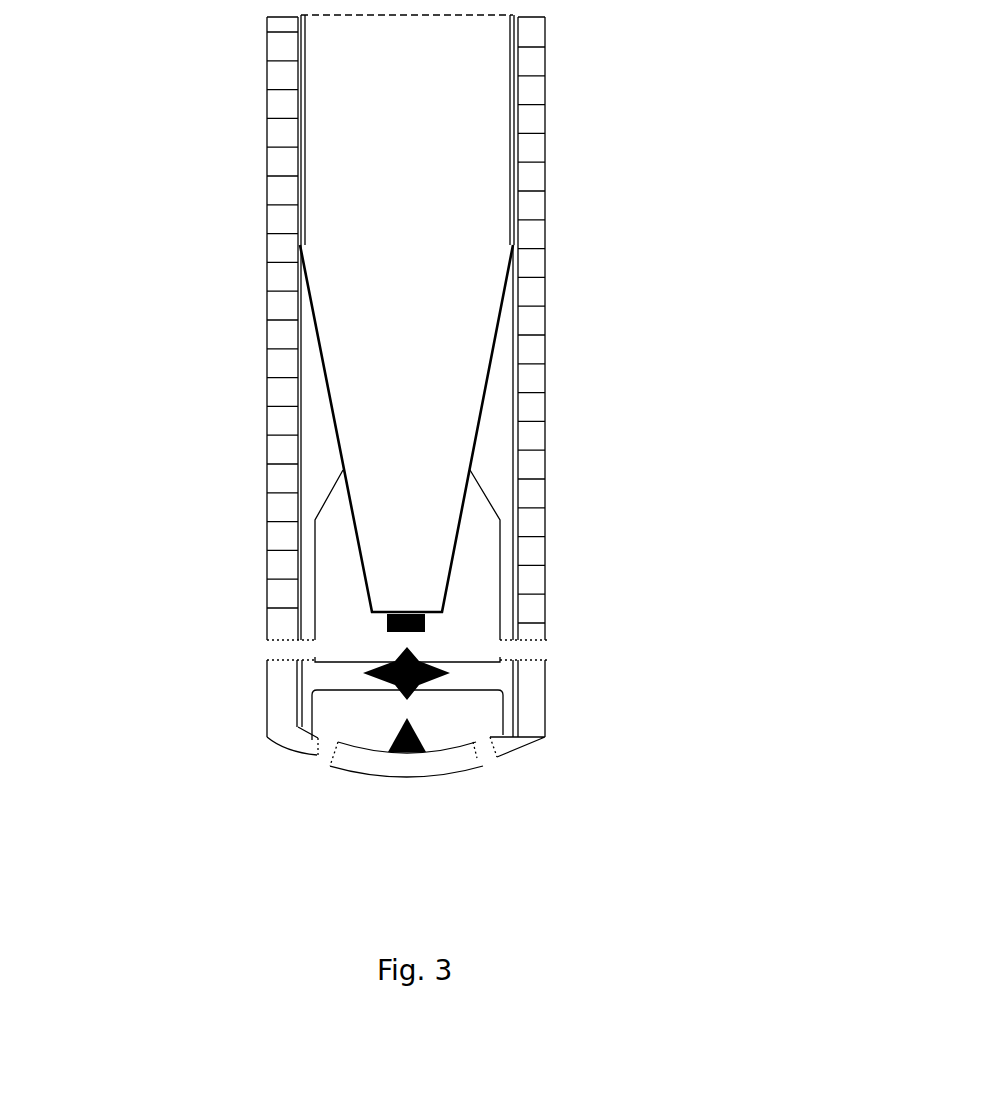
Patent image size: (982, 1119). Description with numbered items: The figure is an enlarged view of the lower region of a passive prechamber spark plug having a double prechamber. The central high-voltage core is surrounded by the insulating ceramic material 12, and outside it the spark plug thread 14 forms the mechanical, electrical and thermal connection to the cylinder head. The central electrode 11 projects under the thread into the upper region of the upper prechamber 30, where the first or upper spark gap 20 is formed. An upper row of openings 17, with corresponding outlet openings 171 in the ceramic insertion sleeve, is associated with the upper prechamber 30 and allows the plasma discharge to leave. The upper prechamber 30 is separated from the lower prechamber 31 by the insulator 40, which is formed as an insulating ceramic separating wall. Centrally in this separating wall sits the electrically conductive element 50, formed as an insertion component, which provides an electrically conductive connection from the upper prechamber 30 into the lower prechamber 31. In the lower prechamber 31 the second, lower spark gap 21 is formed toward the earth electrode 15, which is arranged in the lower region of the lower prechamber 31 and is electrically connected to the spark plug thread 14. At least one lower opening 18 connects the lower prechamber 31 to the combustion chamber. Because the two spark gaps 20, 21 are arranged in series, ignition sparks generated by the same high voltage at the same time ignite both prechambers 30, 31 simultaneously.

The insulating ceramic material 12 is at (337, 153).
The spark plug thread 14 is at (546, 152).
The upper spark gap 20 is at (414, 640).
The upper prechamber 30 is at (337, 559).
The central electrode 11 is at (384, 626).
The outlet openings of insulating ceramic sleeve 171 is at (304, 647).
The upper row of openings 17 is at (548, 650).
The electrically conductive element 50 is at (427, 661).
The insulator 40 is at (477, 681).
The lower prechamber 31 is at (331, 708).
The lower spark gap 21 is at (414, 710).
The lower row of openings 18 is at (316, 760).
The earth electrode 15 is at (406, 753).